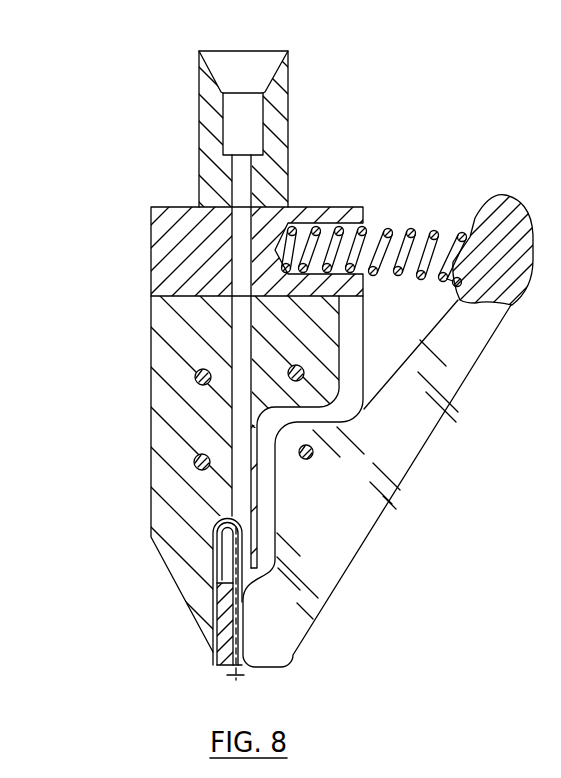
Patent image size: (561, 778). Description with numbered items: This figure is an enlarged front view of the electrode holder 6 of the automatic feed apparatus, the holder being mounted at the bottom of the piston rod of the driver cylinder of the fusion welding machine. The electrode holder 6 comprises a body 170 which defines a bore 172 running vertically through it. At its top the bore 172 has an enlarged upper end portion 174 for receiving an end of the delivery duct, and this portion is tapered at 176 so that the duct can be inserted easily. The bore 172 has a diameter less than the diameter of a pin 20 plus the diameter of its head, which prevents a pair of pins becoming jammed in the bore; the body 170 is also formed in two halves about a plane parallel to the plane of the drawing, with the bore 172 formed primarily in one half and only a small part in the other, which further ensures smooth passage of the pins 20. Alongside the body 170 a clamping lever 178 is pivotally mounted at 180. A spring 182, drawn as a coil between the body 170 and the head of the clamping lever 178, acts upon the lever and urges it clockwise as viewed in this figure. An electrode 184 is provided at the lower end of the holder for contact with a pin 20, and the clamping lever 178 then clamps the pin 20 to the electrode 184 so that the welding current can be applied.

The electrode holder 6 is at (130, 363).
The pin 20 is at (247, 667).
The body 170 is at (163, 312).
The bore 172 is at (244, 193).
The enlarged upper end portion 174 is at (256, 122).
The taper 176 is at (214, 73).
The clamping lever 178 is at (447, 390).
The pivot 180 is at (314, 457).
The spring 182 is at (389, 227).
The electrode 184 is at (218, 657).